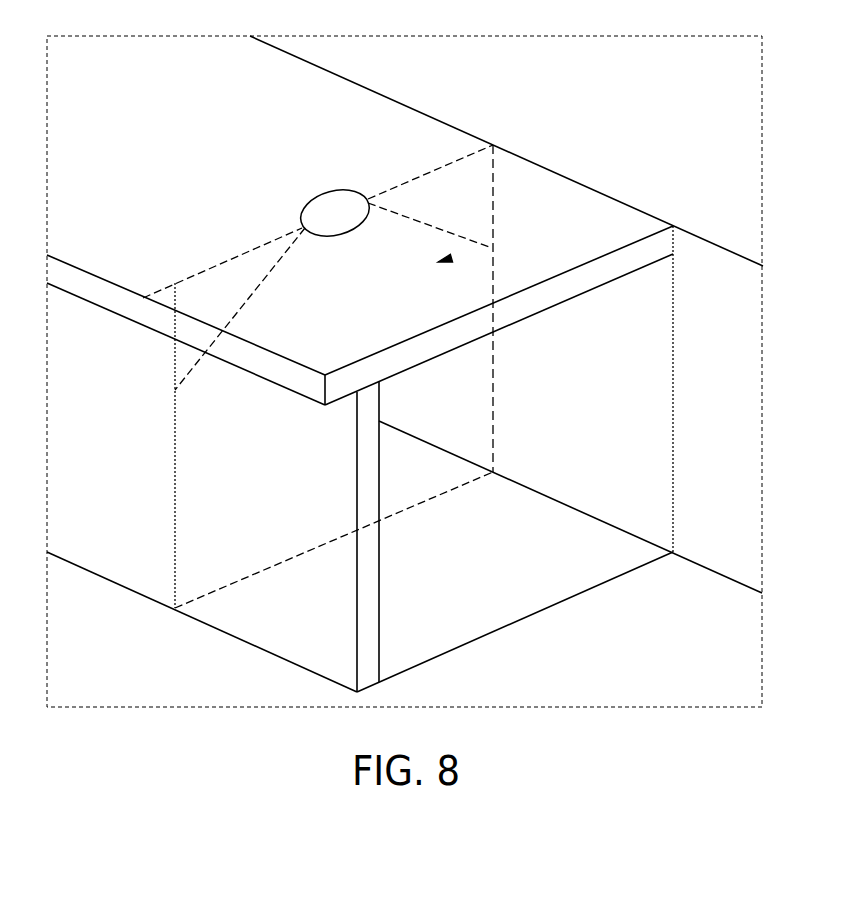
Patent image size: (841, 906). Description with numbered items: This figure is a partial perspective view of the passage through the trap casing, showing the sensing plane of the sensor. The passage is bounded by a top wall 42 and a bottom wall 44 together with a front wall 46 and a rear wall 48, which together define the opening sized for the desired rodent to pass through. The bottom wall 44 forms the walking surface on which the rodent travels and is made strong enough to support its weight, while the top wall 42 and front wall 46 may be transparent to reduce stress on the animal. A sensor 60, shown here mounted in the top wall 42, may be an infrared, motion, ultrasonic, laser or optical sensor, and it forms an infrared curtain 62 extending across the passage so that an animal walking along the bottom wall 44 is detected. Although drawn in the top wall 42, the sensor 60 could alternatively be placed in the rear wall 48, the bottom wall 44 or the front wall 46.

The top wall 42 is at (617, 228).
The bottom wall 44 is at (543, 594).
The front wall 46 is at (270, 625).
The rear wall 48 is at (658, 292).
The sensor 60 is at (350, 188).
The curtain 62 is at (450, 259).